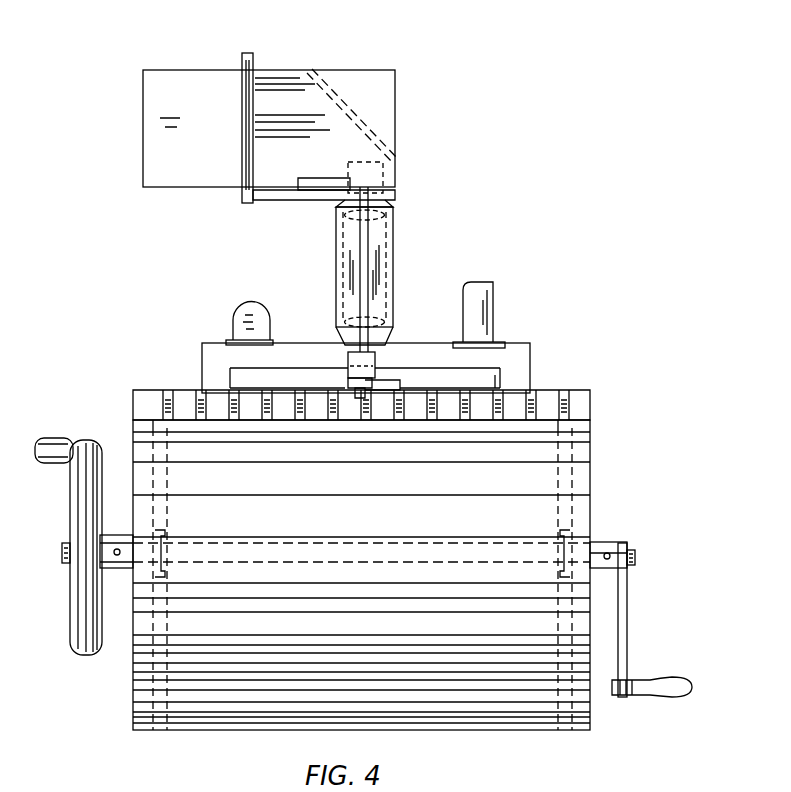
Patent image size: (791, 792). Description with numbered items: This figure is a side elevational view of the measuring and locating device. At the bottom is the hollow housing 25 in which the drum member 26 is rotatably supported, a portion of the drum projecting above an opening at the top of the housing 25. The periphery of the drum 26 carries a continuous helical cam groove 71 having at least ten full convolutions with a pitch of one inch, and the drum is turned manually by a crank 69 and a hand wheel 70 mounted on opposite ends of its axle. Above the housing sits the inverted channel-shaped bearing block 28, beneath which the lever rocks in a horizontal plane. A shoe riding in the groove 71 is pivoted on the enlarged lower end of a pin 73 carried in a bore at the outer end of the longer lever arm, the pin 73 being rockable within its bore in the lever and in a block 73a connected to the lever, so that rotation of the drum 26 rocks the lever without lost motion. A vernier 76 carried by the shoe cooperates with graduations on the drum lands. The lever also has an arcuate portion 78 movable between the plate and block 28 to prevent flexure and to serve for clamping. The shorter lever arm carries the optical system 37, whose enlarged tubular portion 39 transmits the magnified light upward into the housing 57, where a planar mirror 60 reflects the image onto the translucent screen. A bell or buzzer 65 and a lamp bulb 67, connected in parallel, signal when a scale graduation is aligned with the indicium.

The hollow housing 25 is at (133, 445).
The drum member 26 is at (184, 390).
The bearing block 28 is at (438, 331).
The optical system 37 is at (405, 253).
The enlarged tubular portion 39 is at (341, 255).
The housing 57 is at (209, 78).
The reflecting member 60 is at (366, 115).
The bell or buzzer 65 is at (490, 300).
The lamp bulb 67 is at (255, 285).
The crank 69 is at (628, 652).
The hand wheel 70 is at (72, 603).
The helical groove 71 is at (534, 425).
The pin 73 is at (368, 383).
The block 73a is at (348, 357).
The vernier 76 is at (400, 381).
The arcuate portion 78 is at (495, 365).